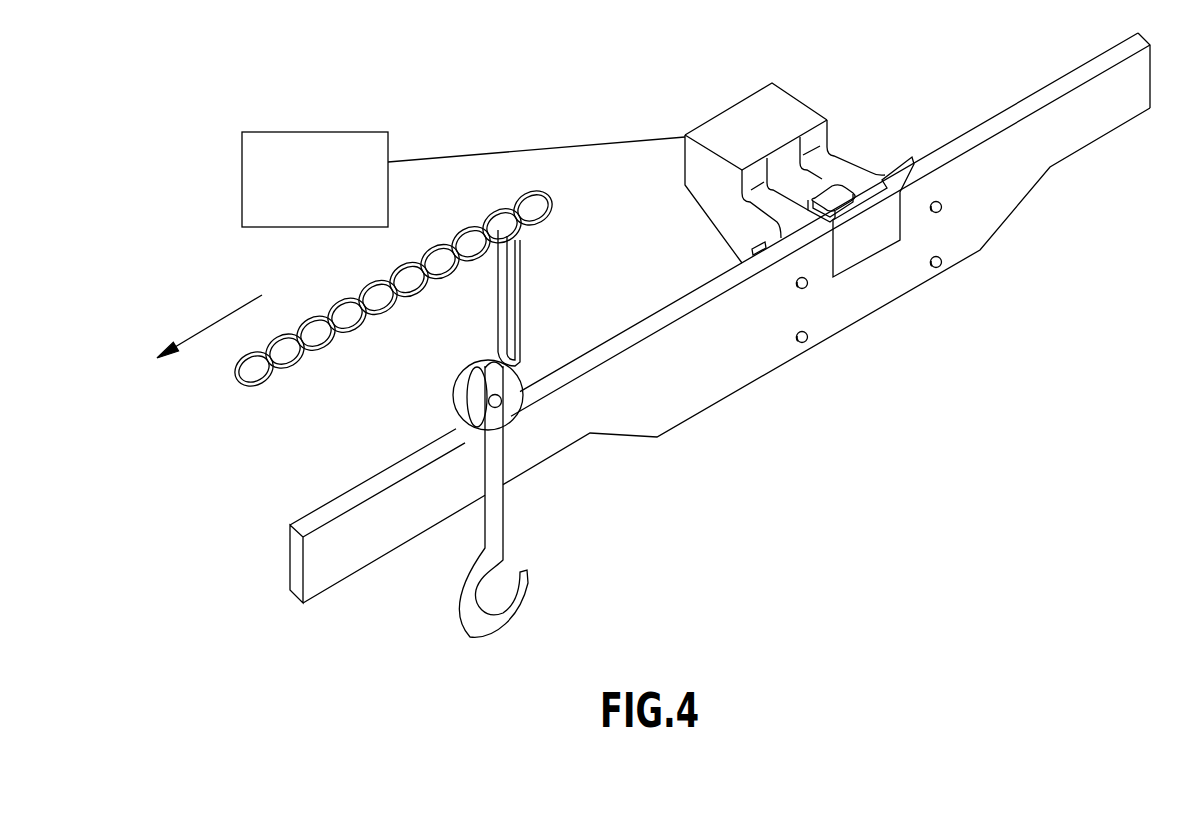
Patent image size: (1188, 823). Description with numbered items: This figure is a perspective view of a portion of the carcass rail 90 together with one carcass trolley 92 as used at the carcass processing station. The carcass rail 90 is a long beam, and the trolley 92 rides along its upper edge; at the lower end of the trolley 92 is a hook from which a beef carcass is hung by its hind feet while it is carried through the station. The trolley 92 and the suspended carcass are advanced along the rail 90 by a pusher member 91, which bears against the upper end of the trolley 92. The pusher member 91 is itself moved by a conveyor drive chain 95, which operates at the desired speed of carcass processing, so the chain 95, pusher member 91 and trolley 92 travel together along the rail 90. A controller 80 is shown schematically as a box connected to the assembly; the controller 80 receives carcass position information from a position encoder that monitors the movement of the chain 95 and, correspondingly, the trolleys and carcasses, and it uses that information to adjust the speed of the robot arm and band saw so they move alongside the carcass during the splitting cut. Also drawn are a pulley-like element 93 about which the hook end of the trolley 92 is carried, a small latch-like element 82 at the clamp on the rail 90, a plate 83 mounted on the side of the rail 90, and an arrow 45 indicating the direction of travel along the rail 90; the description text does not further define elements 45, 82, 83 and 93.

The direction of movement 45 is at (218, 320).
The controller 80 is at (242, 162).
The latch pin 82 is at (803, 188).
The mounting plate 83 is at (863, 240).
The carcass rail 90 is at (662, 340).
The pusher member 91 is at (522, 307).
The carcass trolley 92 is at (505, 506).
The pulley 93 is at (452, 397).
The conveyor drive chain 95 is at (470, 226).